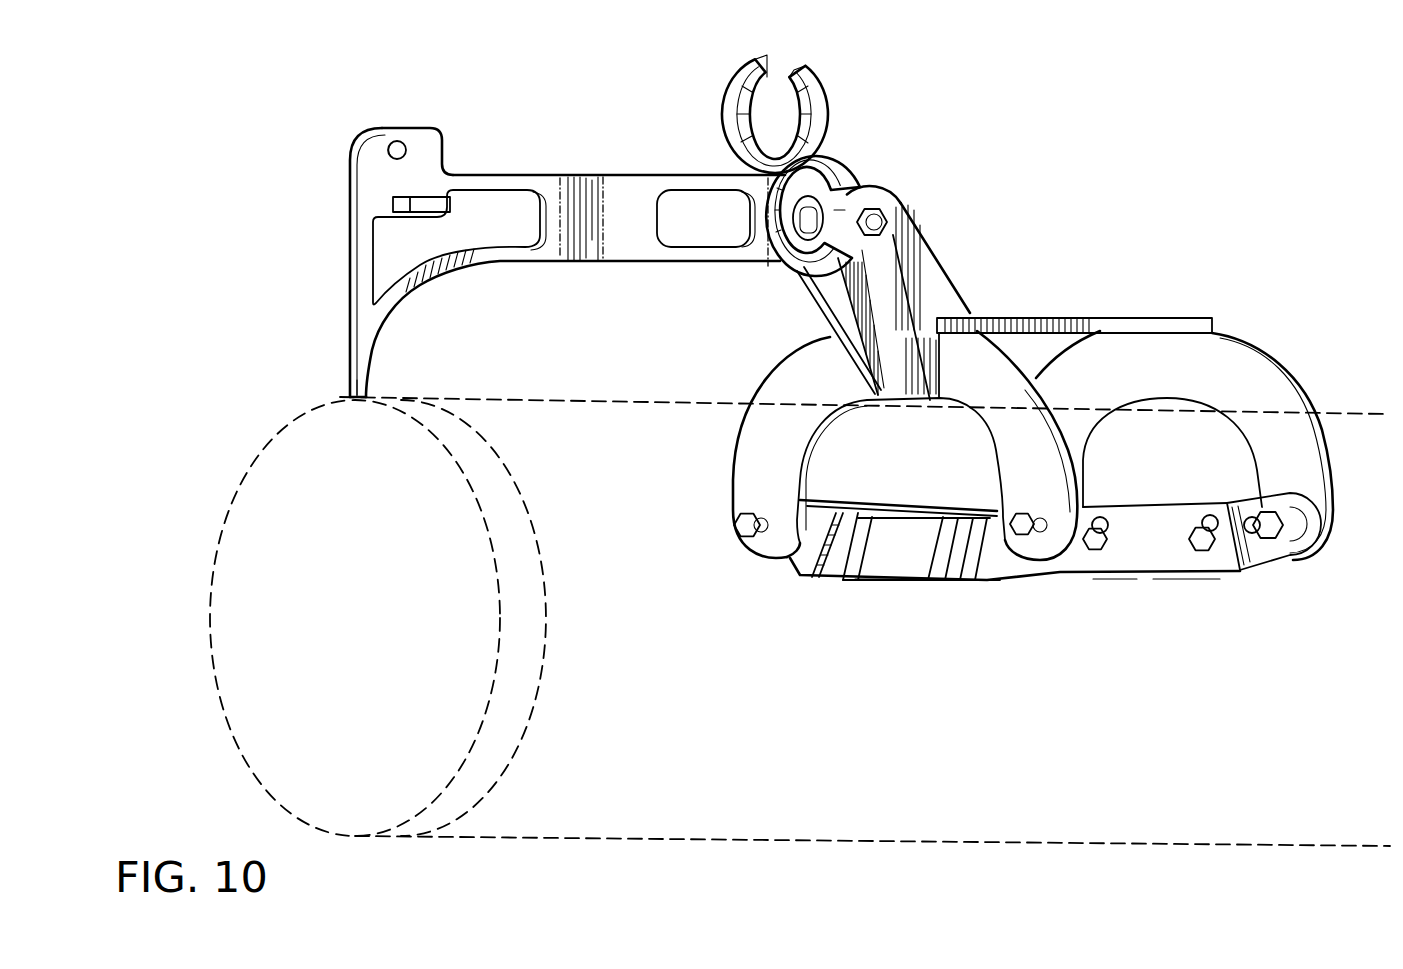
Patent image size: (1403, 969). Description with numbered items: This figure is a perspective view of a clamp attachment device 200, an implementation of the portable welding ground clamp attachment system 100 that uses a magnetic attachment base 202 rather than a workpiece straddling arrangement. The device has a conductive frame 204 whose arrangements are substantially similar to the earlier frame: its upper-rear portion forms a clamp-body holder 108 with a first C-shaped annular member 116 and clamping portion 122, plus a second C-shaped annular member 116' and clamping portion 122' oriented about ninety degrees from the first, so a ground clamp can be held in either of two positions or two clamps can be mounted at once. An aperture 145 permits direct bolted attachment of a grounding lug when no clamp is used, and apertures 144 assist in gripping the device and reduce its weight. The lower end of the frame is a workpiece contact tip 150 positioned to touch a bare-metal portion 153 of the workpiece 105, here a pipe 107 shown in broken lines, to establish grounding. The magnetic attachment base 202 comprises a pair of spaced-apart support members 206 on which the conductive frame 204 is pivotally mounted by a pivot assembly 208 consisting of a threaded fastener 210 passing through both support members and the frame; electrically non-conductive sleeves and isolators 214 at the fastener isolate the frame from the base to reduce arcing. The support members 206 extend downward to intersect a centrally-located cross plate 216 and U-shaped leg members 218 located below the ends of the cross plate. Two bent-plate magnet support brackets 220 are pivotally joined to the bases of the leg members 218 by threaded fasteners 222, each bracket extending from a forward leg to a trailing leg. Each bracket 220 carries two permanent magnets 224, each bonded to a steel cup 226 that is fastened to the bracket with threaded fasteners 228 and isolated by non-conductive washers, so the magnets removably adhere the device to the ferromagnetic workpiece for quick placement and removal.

The portable welding ground clamp attachment system 100 is at (1112, 160).
The workpiece 105 is at (564, 840).
The pipe 107 is at (570, 400).
The clamp-body holder 108 is at (833, 119).
The C-shaped annular member 116 is at (842, 210).
The second C-shaped annular member 116' is at (745, 114).
The clamping portion 122 is at (357, 208).
The second clamping portion 122' is at (449, 140).
The apertures 144 is at (390, 257).
The aperture 145 is at (386, 150).
The workpiece contact tip 150 is at (350, 385).
The bare-metal portion 153 is at (516, 517).
The clamp attachment device 200 is at (1133, 190).
The magnetic attachment base 202 is at (1102, 313).
The conductive frame 204 is at (633, 267).
The support members 206 is at (933, 257).
The pivot assembly 208 is at (907, 203).
The threaded fastener 210 is at (878, 208).
The sleeves and isolators 214 is at (917, 217).
The cross plate 216 is at (1153, 317).
The U-shaped leg members 218 is at (807, 357).
The magnet support brackets 220 is at (788, 567).
The threaded fasteners 222 is at (745, 520).
The permanent magnets 224 is at (873, 580).
The steel cup 226 is at (852, 573).
The threaded fasteners 228 is at (1211, 519).